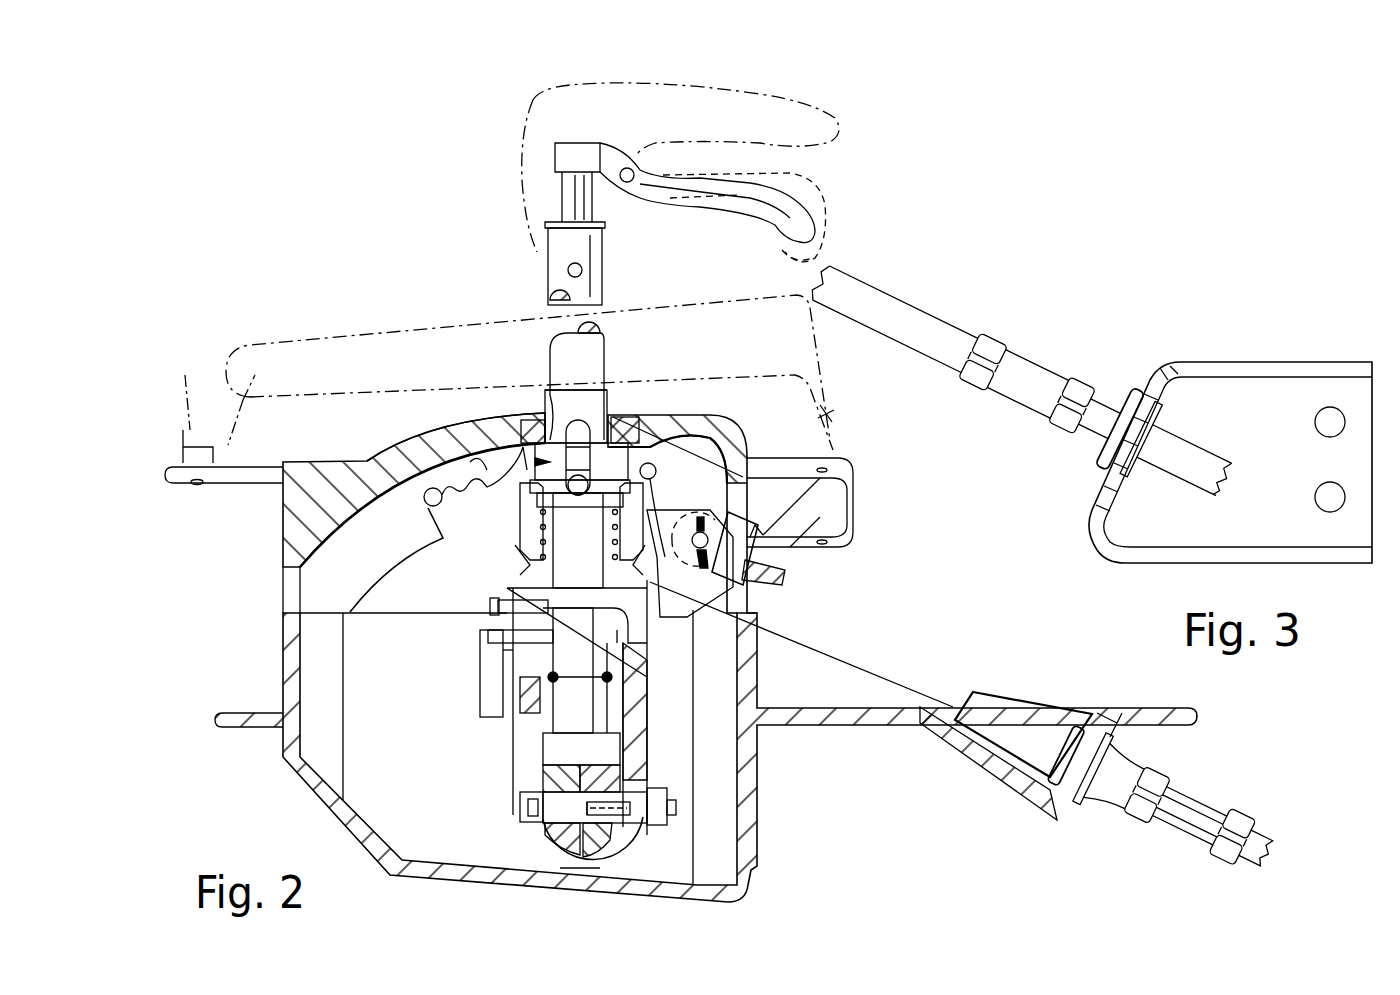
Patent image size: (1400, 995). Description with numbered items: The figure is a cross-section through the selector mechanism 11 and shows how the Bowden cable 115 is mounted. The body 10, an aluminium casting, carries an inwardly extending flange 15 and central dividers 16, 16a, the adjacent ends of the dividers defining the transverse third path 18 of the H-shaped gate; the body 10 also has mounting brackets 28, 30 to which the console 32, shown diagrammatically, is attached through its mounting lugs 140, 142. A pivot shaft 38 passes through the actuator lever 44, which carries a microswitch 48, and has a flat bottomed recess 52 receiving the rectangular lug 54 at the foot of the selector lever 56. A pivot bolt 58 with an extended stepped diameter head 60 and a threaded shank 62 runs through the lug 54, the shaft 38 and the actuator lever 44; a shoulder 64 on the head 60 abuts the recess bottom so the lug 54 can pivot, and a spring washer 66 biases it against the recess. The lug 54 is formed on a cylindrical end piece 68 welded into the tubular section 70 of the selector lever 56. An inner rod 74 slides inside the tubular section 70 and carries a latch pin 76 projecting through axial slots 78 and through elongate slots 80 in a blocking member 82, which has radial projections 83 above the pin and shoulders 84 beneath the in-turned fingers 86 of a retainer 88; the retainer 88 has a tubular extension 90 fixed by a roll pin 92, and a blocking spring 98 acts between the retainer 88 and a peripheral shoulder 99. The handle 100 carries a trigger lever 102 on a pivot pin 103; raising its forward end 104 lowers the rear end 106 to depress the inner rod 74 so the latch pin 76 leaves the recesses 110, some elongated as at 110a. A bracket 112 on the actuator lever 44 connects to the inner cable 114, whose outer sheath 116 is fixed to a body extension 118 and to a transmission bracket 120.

In FIG. 2, the body 10 is at (280, 640).
In FIG. 3, the selector mechanism 11 is at (976, 232).
In FIG. 2, the inwardly extending flange 15 is at (372, 560).
In FIG. 2, the central divider 16 is at (490, 440).
In FIG. 2, the central divider 16a is at (683, 440).
In FIG. 2, the transverse third path 18 is at (548, 395).
In FIG. 2, the mounting bracket 28 is at (842, 508).
In FIG. 2, the mounting bracket 30 is at (176, 486).
In FIG. 2, the console 32 is at (330, 330).
In FIG. 2, the pivot shaft 38 is at (588, 850).
In FIG. 2, the actuator lever 44 is at (650, 728).
In FIG. 2, the microswitch 48 is at (487, 692).
In FIG. 2, the flat bottomed recess 52 is at (620, 828).
In FIG. 2, the lug 54 is at (560, 778).
In FIG. 2, the selector lever 56 is at (535, 256).
In FIG. 2, the pivot bolt 58 is at (680, 808).
In FIG. 2, the stepped diameter head 60 is at (530, 817).
In FIG. 2, the threaded shank 62 is at (623, 793).
In FIG. 2, the shoulder 64 is at (556, 822).
In FIG. 2, the spring washer 66 is at (540, 806).
In FIG. 2, the cylindrical end piece 68 is at (560, 725).
In FIG. 2, the tubular section 70 is at (560, 284).
In FIG. 2, the inner rod 74 is at (613, 227).
In FIG. 2, the latch pin 76 is at (586, 490).
In FIG. 2, the axial slots 78 is at (578, 442).
In FIG. 2, the elongate slots 80 is at (572, 430).
In FIG. 2, the blocking member 82 is at (487, 470).
In FIG. 2, the radial projections 83 is at (533, 427).
In FIG. 2, the shoulders 84 is at (523, 542).
In FIG. 2, the in-turned fingers 86 is at (522, 507).
In FIG. 2, the retainer 88 is at (641, 575).
In FIG. 2, the tubular extension 90 is at (497, 622).
In FIG. 2, the roll pin 92 is at (497, 645).
In FIG. 2, the blocking spring 98 is at (522, 555).
In FIG. 2, the peripheral shoulder 99 is at (566, 510).
In FIG. 2, the handle 100 is at (535, 100).
In FIG. 2, the trigger lever 102 is at (785, 195).
In FIG. 2, the pivot pin 103 is at (636, 176).
In FIG. 2, the forward end 104 is at (803, 240).
In FIG. 2, the rear end 106 is at (550, 155).
In FIG. 2, the recesses 110 is at (425, 452).
In FIG. 2, the elongated recess 110a is at (475, 437).
In FIG. 2, the bracket 112 is at (665, 643).
In FIG. 2, the inner cable 114 is at (786, 578).
In FIG. 2, the Bowden cable 115 is at (1265, 826).
In FIG. 3, the Bowden cable 115 is at (943, 314).
In FIG. 2, the outer sheath 116 is at (1110, 790).
In FIG. 3, the outer sheath 116 is at (1040, 368).
In FIG. 2, the extension 118 is at (978, 762).
In FIG. 3, the bracket 120 is at (1190, 370).
In FIG. 2, the mounting lug 140 is at (838, 416).
In FIG. 2, the mounting lug 142 is at (198, 393).